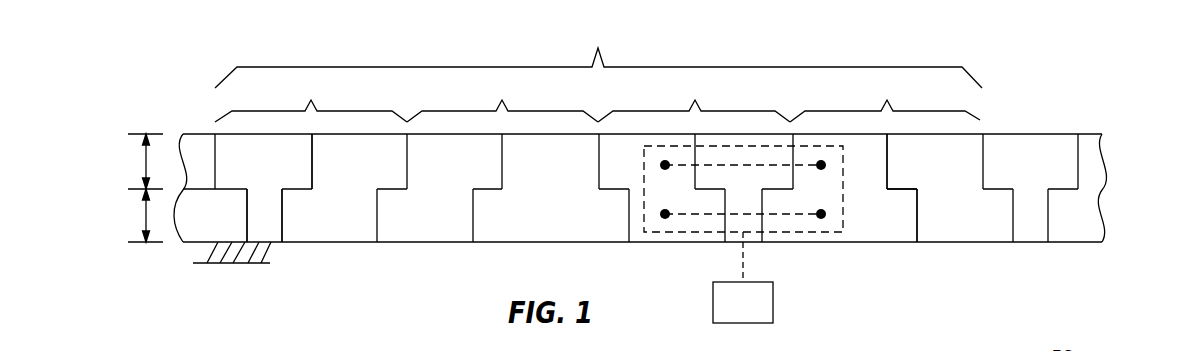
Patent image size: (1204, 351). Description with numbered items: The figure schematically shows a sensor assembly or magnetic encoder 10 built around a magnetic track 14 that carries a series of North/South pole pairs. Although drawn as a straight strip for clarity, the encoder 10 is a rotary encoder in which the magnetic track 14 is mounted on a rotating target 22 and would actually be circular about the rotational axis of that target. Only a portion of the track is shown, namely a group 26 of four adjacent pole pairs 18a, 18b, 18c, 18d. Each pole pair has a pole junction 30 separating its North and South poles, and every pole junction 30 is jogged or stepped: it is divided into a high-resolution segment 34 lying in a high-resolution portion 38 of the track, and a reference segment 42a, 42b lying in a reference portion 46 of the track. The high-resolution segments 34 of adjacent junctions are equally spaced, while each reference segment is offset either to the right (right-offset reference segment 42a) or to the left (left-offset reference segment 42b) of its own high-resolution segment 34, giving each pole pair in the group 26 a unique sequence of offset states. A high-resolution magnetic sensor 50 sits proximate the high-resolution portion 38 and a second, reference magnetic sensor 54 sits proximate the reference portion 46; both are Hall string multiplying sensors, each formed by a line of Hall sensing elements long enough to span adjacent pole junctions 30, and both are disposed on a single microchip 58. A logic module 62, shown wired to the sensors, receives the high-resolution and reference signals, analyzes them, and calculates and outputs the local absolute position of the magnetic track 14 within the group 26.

The magnetic encoder 10 is at (1106, 89).
The magnetic track 14 is at (981, 111).
The first pole pair 18a is at (311, 99).
The second pole pair 18b is at (502, 99).
The third pole pair 18c is at (694, 99).
The fourth pole pair 18d is at (885, 99).
The rotating target 22 is at (200, 263).
The group of pole pairs 26 is at (598, 56).
The pole junction 30 is at (297, 193).
The high-resolution segment 34 is at (313, 168).
The high-resolution portion 38 is at (142, 162).
The right-offset reference segment 42a is at (917, 217).
The left-offset reference segment 42b is at (282, 222).
The reference portion 46 is at (142, 216).
The high-resolution magnetic sensor 50 is at (805, 173).
The reference magnetic sensor 54 is at (790, 222).
The microchip 58 is at (688, 235).
The logic module 62 is at (773, 305).